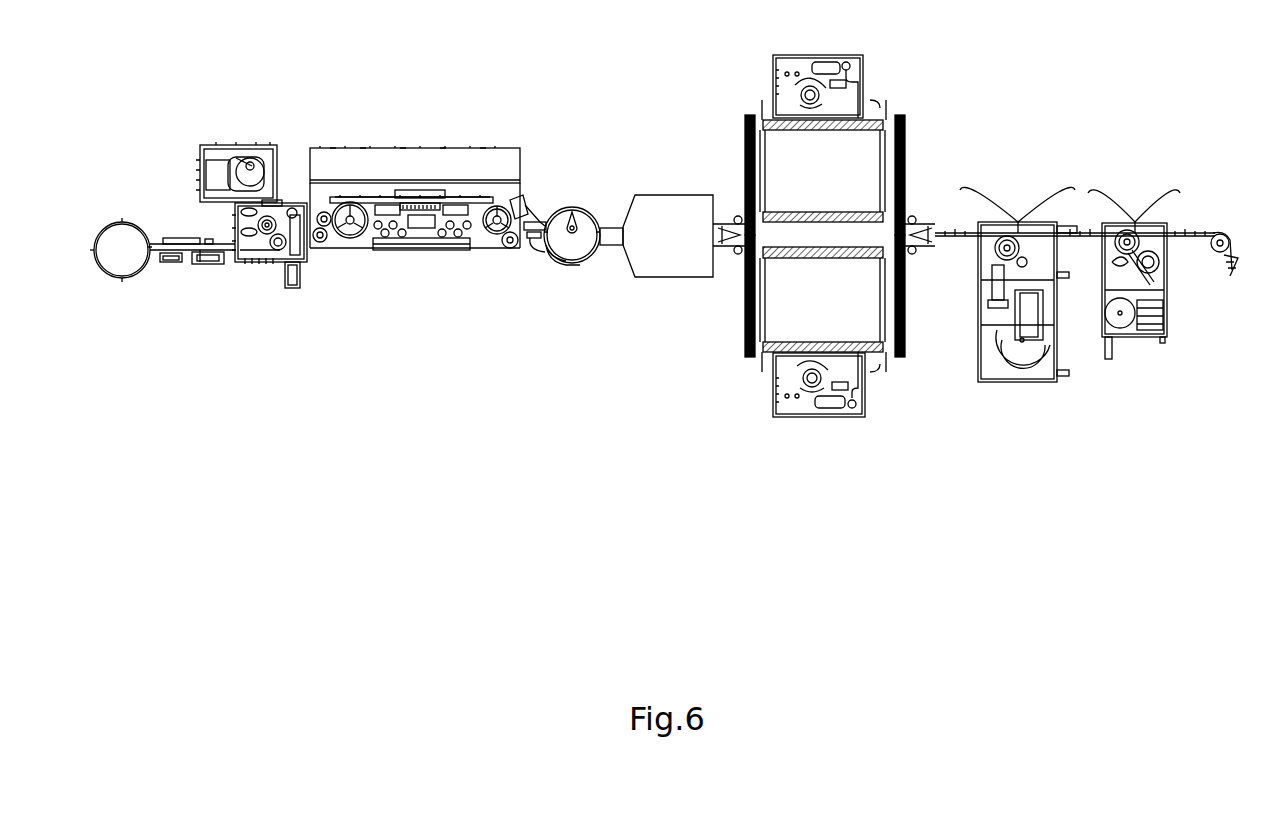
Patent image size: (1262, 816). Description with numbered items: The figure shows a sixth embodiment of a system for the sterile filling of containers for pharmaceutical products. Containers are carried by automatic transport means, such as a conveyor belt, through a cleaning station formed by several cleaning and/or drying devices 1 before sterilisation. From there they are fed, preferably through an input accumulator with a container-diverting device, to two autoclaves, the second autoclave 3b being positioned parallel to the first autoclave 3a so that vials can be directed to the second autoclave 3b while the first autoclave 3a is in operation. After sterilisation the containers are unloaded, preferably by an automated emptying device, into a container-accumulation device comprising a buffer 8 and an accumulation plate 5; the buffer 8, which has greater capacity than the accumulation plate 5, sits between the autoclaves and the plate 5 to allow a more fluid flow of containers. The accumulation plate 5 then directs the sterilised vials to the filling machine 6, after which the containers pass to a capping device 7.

The cleaning and/or drying devices 1 is at (1082, 166).
The first autoclave 3a is at (838, 163).
The second autoclave 3b is at (852, 308).
The accumulation plate 5 is at (568, 314).
The filling machine 6 is at (423, 314).
The capping device 7 is at (215, 314).
The buffer 8 is at (670, 258).